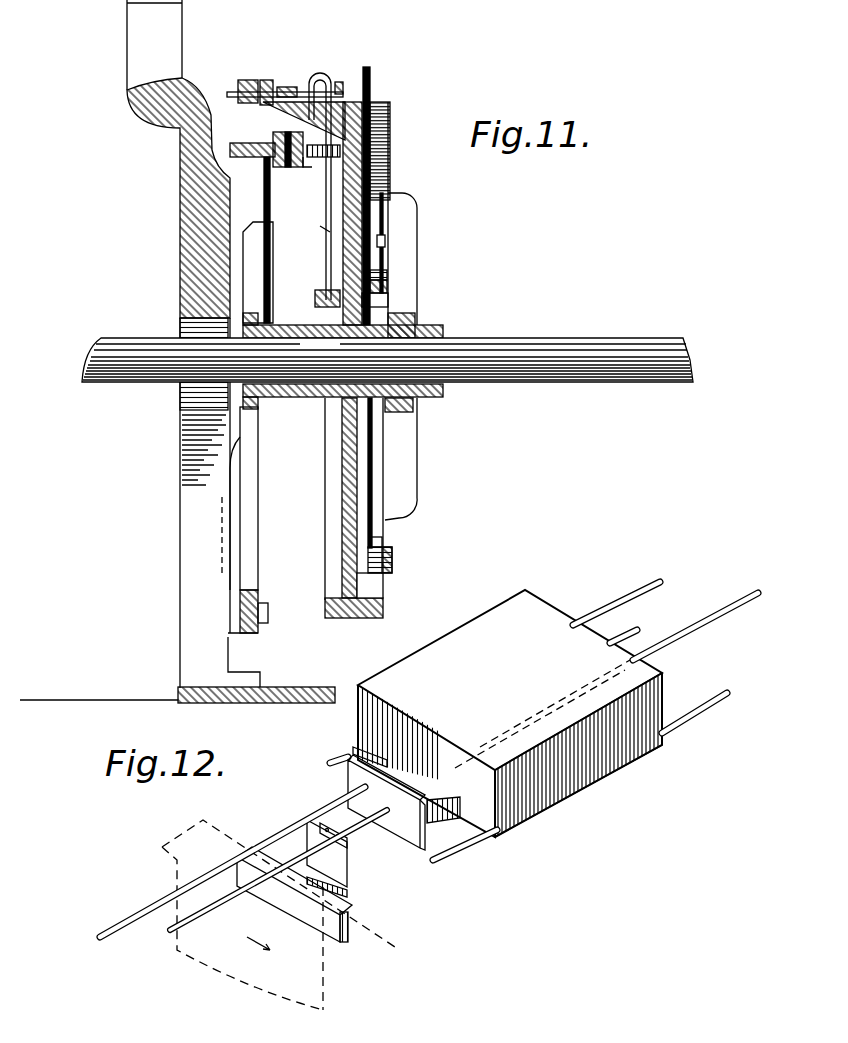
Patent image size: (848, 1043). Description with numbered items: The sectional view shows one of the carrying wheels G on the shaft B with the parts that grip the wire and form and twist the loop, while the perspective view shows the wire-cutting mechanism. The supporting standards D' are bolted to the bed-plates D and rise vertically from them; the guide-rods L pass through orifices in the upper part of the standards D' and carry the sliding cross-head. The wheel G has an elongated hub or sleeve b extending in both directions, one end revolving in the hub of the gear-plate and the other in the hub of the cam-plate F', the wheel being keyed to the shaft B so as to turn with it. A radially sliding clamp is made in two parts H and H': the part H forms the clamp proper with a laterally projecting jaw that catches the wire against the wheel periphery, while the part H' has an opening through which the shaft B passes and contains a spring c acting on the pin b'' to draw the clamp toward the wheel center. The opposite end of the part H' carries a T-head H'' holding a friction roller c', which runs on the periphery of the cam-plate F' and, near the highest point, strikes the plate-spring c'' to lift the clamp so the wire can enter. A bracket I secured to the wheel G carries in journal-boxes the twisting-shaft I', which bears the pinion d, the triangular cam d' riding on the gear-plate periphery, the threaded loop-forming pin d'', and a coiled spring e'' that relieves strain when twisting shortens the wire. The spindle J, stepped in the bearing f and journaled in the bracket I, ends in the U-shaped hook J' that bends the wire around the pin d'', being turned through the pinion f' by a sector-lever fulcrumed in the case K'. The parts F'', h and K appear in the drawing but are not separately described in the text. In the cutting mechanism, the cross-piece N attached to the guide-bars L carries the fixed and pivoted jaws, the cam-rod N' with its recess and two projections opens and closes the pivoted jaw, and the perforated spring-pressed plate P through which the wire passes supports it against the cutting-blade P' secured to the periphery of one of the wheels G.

In FIG. 11, the supporting frame or standard D' is at (197, 344).
In FIG. 11, the bed-plate D is at (177, 682).
In FIG. 11, the cam-plate F' is at (333, 406).
In FIG. 11, the frame bracket F'' is at (414, 349).
In FIG. 11, the rod h is at (243, 222).
In FIG. 11, the plate K is at (252, 136).
In FIG. 11, the case K' is at (307, 170).
In FIG. 11, the bracket I is at (282, 138).
In FIG. 11, the twisting-shaft I' is at (285, 61).
In FIG. 11, the bearing f is at (315, 288).
In FIG. 11, the pinion f' is at (305, 176).
In FIG. 11, the pinion d is at (268, 81).
In FIG. 11, the triangular block or cam d' is at (247, 80).
In FIG. 11, the loop-forming pin d'' is at (351, 76).
In FIG. 11, the coiled spring e'' is at (288, 83).
In FIG. 11, the spindle or shaft J is at (315, 230).
In FIG. 11, the U-shaped hook J' is at (322, 172).
In FIG. 11, the clamp part H is at (382, 292).
In FIG. 11, the clamp part H' is at (392, 294).
In FIG. 11, the cross-bar or T-head H'' is at (400, 564).
In FIG. 11, the spring c is at (385, 275).
In FIG. 11, the friction wheel or roller c' is at (397, 541).
In FIG. 11, the plate-spring c'' is at (368, 590).
In FIG. 11, the hub or sleeve b is at (354, 354).
In FIG. 11, the pin b'' is at (426, 269).
In FIG. 11, the shaft B is at (592, 350).
In FIG. 11, the carrying disk or wheel G is at (342, 437).
In FIG. 12, the carrying disk or wheel G is at (190, 843).
In FIG. 12, the cross-piece N is at (510, 713).
In FIG. 12, the guide-rod L is at (622, 608).
In FIG. 12, the plate P is at (404, 798).
In FIG. 12, the cutting-blade P' is at (350, 844).
In FIG. 12, the cam-rod N' is at (243, 862).